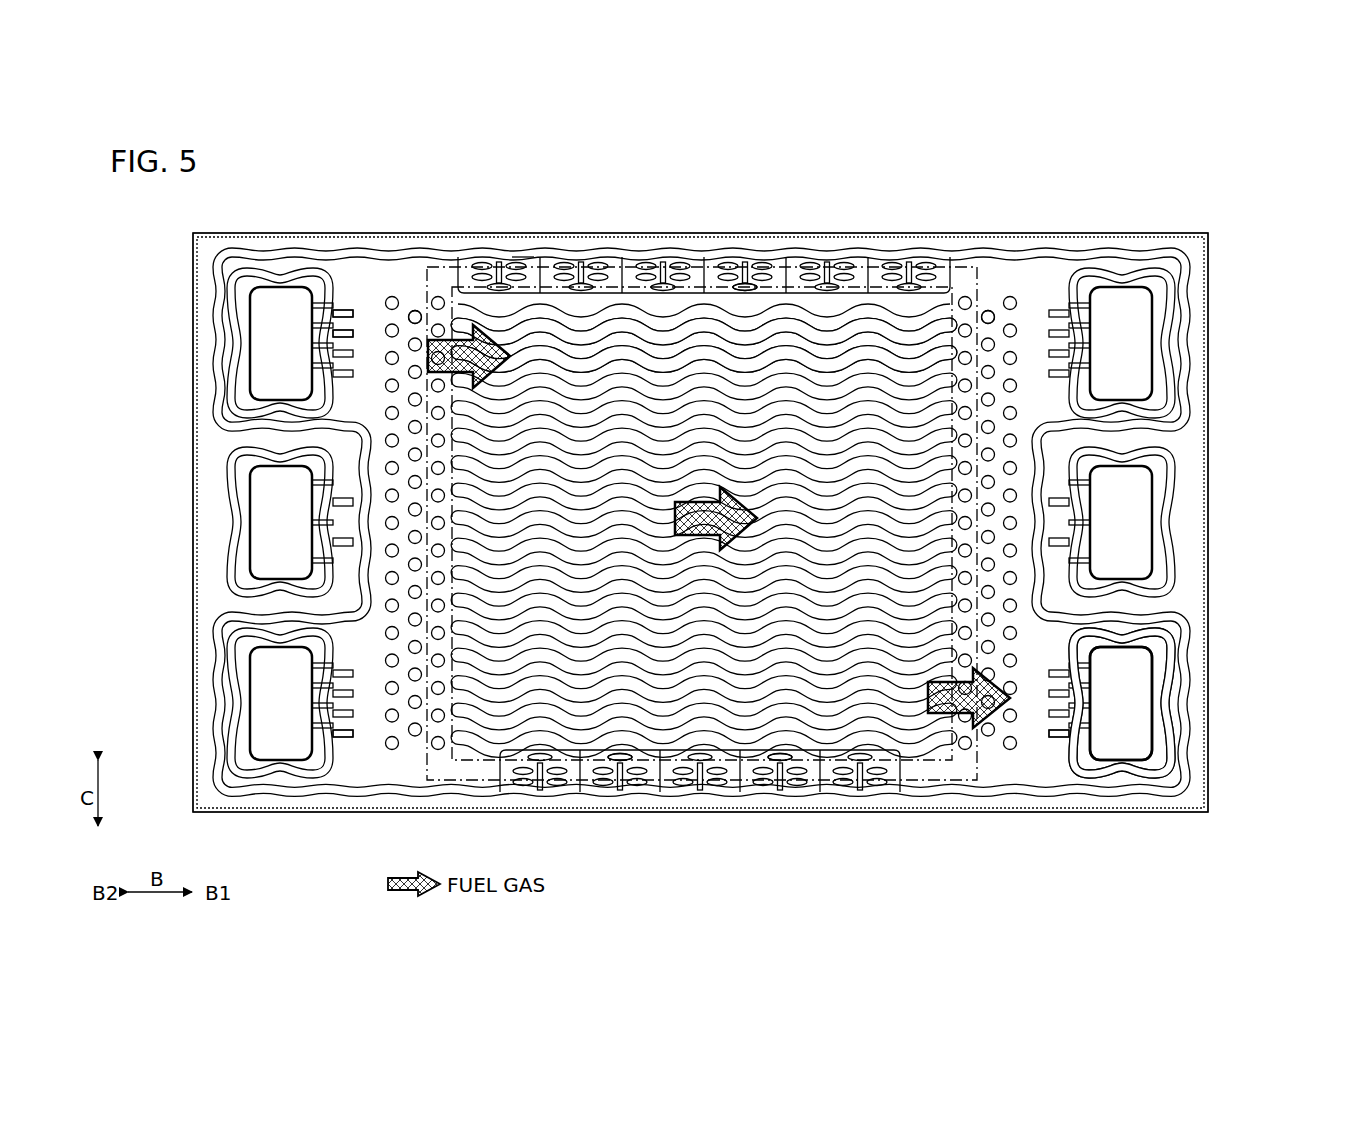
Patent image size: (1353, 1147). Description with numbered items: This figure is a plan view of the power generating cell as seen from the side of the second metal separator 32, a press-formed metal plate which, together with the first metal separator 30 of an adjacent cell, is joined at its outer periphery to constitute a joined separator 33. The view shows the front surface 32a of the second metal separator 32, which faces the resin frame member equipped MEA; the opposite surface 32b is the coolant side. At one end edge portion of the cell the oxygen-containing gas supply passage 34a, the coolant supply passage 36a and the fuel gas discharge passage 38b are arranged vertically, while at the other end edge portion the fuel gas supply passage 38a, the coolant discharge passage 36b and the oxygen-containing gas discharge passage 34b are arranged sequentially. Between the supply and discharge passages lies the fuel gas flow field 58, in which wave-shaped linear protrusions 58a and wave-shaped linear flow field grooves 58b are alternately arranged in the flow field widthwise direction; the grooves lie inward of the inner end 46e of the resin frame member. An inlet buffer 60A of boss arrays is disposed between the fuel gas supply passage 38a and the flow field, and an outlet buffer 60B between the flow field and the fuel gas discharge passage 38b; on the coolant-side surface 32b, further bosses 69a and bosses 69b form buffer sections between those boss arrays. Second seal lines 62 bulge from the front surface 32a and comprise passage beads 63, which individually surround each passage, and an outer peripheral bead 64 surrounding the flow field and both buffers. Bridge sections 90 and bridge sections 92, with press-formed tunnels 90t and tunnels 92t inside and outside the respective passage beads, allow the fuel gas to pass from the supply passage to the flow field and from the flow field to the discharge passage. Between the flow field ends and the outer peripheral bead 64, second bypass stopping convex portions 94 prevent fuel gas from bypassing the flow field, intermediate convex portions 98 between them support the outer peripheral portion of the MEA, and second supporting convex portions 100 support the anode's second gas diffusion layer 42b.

The first metal separator 30 is at (581, 231).
The second metal separator 32 is at (560, 231).
The front surface 32a is at (480, 250).
The surface on opposite side from fuel gas flow field 32b is at (522, 250).
The joined separator 33 is at (1186, 165).
The oxygen-containing gas supply passage 34a is at (1133, 328).
The oxygen-containing gas discharge passage 34b is at (265, 685).
The coolant supply passage 36a is at (1138, 503).
The coolant discharge passage 36b is at (262, 500).
The fuel gas supply passage 38a is at (262, 313).
The fuel gas discharge passage 38b is at (1135, 690).
The second gas diffusion layer 42b is at (421, 265).
The inner end of resin frame member 46e is at (931, 762).
The fuel gas flow field 58 is at (690, 176).
The linear protrusions 58a is at (638, 330).
The linear flow field grooves 58b is at (505, 830).
The inlet buffer 60A is at (432, 576).
The outlet buffer 60B is at (971, 602).
The second seal lines 62 is at (1219, 860).
The passage beads 63 is at (229, 327).
The outer peripheral bead 64 is at (1110, 792).
The bosses 69a is at (414, 310).
The bosses 69b is at (988, 310).
The bridge sections 90 is at (353, 284).
The tunnels 90t is at (342, 309).
The bridge sections 92 is at (346, 742).
The tunnels 92t is at (1085, 726).
The second bypass stopping convex portions 94 is at (730, 268).
The intermediate convex portions 98 is at (812, 262).
The second supporting convex portions 100 is at (749, 282).